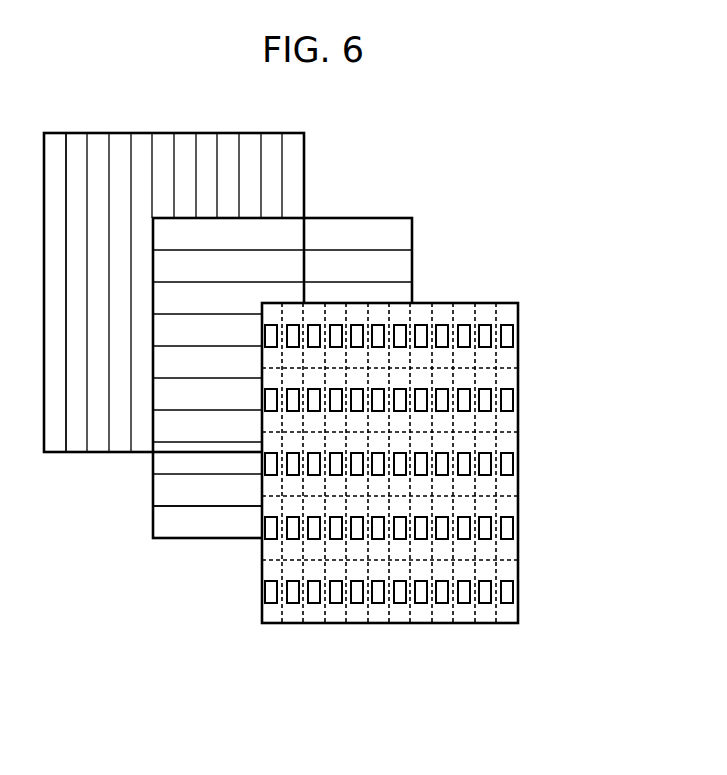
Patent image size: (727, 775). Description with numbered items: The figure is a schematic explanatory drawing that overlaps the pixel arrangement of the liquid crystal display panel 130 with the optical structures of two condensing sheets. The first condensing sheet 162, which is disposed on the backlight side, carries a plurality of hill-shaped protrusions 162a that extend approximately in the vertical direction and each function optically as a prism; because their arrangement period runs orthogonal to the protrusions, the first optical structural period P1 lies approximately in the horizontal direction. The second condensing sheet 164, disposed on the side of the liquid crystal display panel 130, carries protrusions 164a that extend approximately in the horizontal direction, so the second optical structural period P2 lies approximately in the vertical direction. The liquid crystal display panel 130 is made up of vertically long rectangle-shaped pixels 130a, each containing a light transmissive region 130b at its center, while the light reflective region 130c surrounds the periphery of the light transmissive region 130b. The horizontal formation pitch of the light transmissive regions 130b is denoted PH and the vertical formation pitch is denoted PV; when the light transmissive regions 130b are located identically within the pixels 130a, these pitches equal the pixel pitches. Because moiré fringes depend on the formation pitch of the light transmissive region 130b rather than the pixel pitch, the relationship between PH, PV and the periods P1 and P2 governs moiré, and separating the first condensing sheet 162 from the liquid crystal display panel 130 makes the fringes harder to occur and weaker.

The first condensing sheet 162 is at (100, 132).
The protrusion 162a is at (67, 421).
The second condensing sheet 164 is at (357, 218).
The protrusion 164a is at (186, 507).
The liquid crystal display panel 130 is at (442, 463).
The pixel 130a is at (508, 482).
The light transmissive region 130b is at (508, 527).
The light reflective region 130c is at (508, 612).
The first optical structural period P1 is at (197, 115).
The second optical structural period P2 is at (412, 218).
The horizontal formation pitch PH is at (492, 291).
The vertical formation pitch PV is at (518, 348).